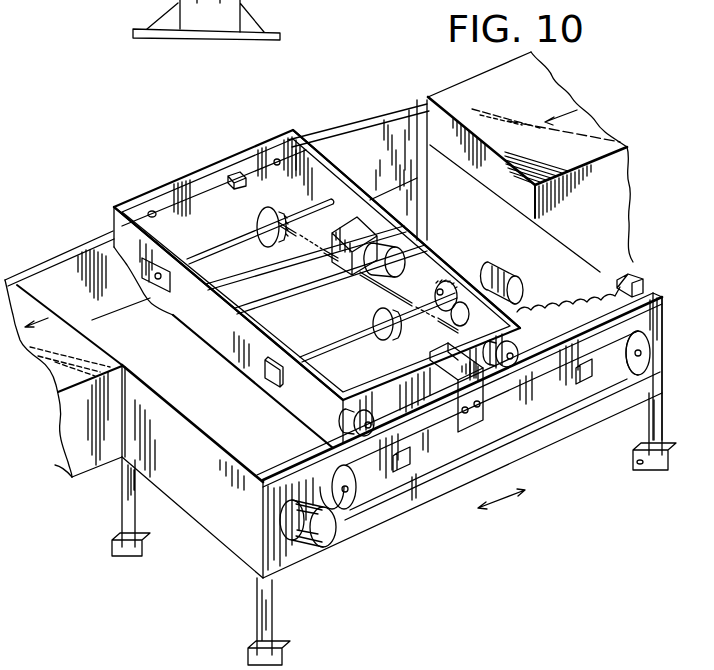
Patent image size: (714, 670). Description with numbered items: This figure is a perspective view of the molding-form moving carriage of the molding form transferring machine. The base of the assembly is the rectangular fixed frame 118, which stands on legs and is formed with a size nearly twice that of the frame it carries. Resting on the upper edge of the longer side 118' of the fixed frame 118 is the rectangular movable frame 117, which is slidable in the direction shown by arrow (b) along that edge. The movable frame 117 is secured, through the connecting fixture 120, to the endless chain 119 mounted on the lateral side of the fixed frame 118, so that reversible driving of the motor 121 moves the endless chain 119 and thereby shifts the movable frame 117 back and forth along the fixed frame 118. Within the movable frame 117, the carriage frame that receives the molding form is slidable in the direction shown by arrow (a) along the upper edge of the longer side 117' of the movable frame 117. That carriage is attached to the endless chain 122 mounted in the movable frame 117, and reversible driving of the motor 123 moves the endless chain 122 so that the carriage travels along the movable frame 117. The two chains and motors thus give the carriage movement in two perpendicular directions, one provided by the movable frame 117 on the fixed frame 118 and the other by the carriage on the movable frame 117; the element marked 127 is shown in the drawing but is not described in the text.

The rectangular movable frame 117 is at (317, 289).
The longer side of the movable frame 117' is at (317, 265).
The rectangular fixed frame 118 is at (394, 479).
The longer side of the fixed frame 118' is at (421, 216).
The endless chain 119 is at (442, 467).
The connecting fixture 120 is at (459, 418).
The motor 121 is at (313, 541).
The endless chain 122 is at (270, 250).
The motor 123 is at (496, 284).
The roller block 127 is at (400, 252).